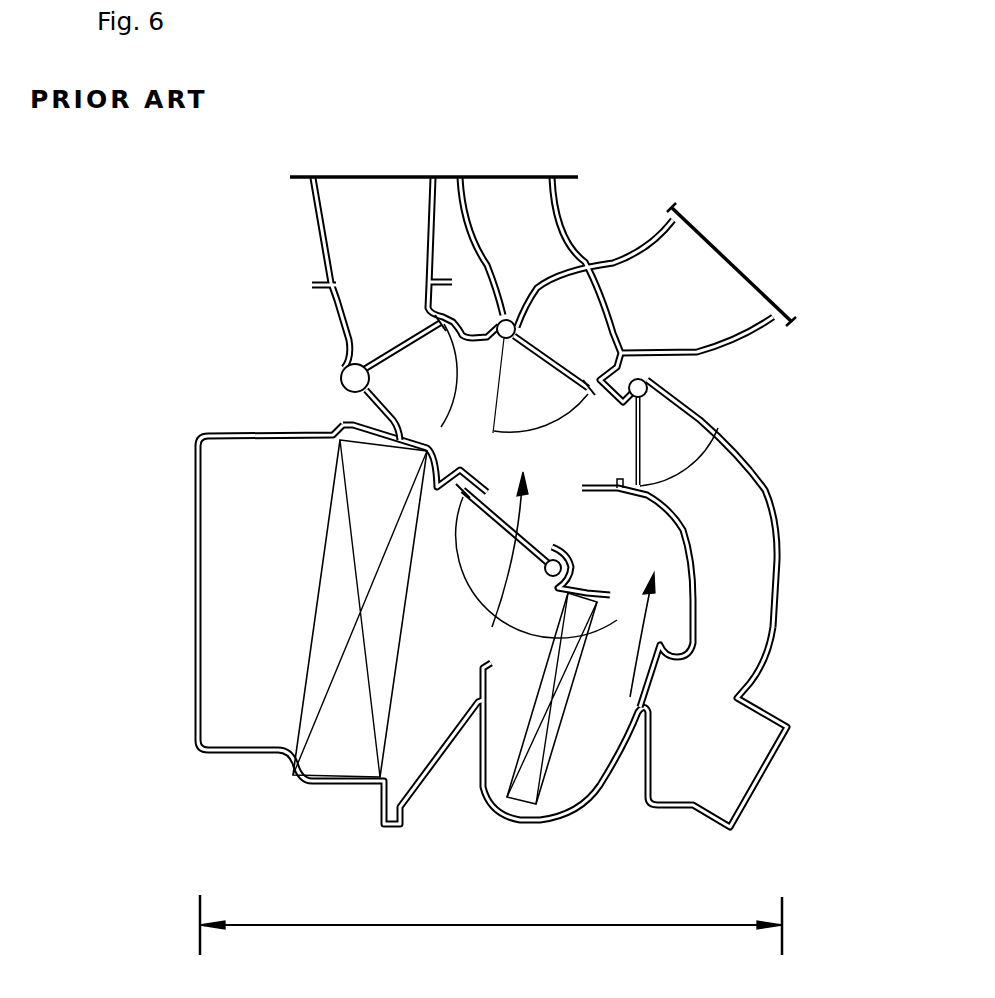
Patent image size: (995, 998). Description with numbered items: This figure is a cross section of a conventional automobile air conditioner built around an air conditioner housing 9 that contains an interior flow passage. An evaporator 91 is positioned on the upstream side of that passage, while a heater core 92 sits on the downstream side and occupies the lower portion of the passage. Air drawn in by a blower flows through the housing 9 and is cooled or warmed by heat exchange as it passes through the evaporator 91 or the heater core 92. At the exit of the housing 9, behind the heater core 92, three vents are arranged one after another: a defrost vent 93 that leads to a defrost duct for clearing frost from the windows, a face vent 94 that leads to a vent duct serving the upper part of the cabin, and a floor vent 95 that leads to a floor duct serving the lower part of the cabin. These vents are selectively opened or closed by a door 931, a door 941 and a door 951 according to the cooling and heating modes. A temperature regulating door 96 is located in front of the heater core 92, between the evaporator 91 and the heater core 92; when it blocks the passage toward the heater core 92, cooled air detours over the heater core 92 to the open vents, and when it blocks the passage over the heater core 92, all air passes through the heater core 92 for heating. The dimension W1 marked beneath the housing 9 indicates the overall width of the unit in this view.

The air conditioner housing 9 is at (268, 426).
The evaporator 91 is at (328, 750).
The heater core 92 is at (538, 783).
The defrost vent 93 is at (337, 230).
The door 931 is at (398, 352).
The face vent 94 is at (545, 215).
The door 941 is at (558, 360).
The floor vent 95 is at (743, 547).
The door 951 is at (637, 453).
The temperature regulating door 96 is at (520, 522).
The unit width W1 is at (350, 925).